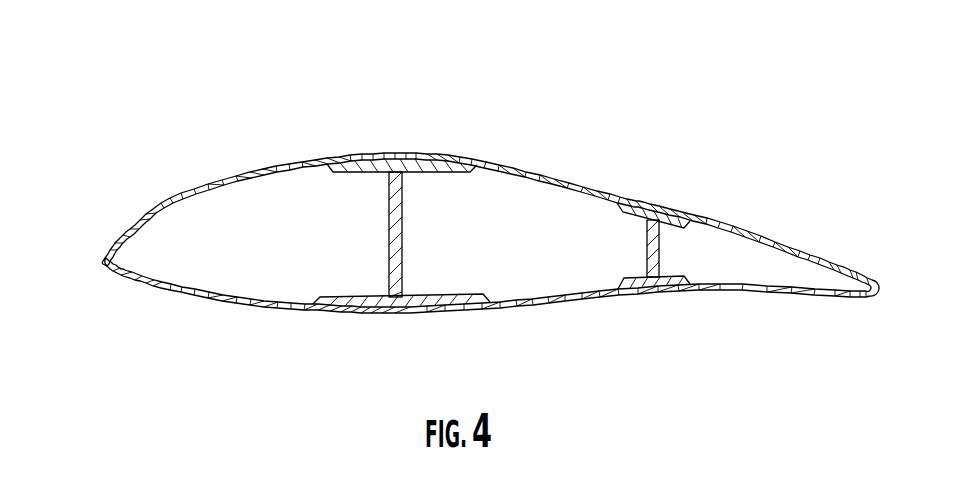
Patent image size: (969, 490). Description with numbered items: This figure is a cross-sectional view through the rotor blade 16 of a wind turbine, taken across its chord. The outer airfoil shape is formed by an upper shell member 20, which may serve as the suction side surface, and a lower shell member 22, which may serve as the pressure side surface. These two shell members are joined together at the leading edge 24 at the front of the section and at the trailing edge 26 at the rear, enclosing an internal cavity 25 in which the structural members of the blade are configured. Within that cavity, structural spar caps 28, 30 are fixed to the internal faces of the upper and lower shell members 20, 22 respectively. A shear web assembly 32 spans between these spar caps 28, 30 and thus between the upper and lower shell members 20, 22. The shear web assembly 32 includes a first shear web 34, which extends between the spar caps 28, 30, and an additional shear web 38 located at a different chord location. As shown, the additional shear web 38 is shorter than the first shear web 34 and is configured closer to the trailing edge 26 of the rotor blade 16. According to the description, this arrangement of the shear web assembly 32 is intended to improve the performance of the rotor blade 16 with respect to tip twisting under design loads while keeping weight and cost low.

The rotor blade 16 is at (462, 184).
The upper shell member 20 is at (270, 170).
The lower shell member 22 is at (285, 310).
The leading edge 24 is at (89, 266).
The internal cavity 25 is at (520, 214).
The trailing edge 26 is at (860, 307).
The spar cap 28 is at (392, 165).
The spar cap 30 is at (398, 304).
The shear web assembly 32 is at (324, 219).
The first shear web 34 is at (402, 262).
The additional shear web 38 is at (660, 263).